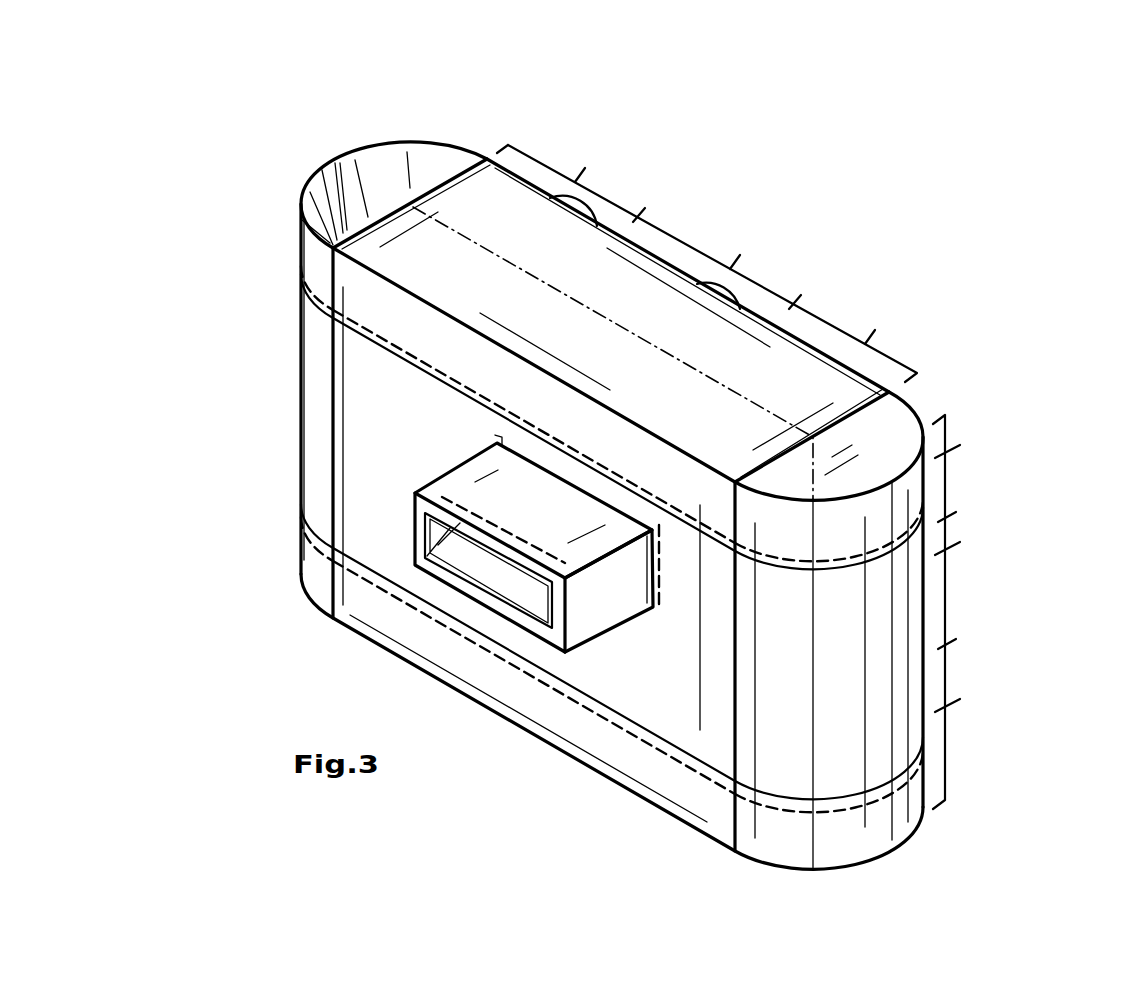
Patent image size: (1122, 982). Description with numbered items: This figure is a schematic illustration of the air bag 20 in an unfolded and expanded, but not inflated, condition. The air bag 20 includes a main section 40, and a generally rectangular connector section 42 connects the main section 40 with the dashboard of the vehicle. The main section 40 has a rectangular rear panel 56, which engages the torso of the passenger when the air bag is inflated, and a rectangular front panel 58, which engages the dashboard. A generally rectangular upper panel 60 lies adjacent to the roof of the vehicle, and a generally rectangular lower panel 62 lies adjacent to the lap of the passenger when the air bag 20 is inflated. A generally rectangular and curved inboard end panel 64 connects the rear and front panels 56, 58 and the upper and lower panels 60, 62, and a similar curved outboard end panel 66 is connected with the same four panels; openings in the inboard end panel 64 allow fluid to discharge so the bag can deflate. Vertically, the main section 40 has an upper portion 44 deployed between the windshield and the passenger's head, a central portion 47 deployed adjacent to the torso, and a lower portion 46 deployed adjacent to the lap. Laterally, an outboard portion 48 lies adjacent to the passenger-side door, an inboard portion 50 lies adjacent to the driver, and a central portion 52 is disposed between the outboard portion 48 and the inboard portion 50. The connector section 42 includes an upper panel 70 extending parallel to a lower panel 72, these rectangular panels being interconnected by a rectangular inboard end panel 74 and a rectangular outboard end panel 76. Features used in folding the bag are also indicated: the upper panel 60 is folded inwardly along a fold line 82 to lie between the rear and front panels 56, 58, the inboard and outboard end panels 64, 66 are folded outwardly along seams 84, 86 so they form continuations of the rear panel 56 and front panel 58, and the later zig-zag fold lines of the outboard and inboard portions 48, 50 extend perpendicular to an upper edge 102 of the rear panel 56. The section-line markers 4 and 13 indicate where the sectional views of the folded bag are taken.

The air bag 20 is at (815, 248).
The main section 40 is at (292, 318).
The seam 86 is at (342, 216).
The outboard end panel 66 is at (318, 408).
The upper panel 60 is at (463, 285).
The fold line 82 is at (663, 350).
The upper edge 102 is at (550, 198).
The rear panel 56 is at (698, 286).
The outboard portion 48 is at (571, 183).
The central portion 52 is at (719, 263).
The inboard portion 50 is at (858, 343).
The upper portion 44 is at (964, 468).
The central portion 47 is at (966, 583).
The lower portion 46 is at (966, 726).
The section line 4- 4 is at (397, 92).
The section line 13- 13 is at (680, 506).
The front panel 58 is at (647, 690).
The connector section 42 is at (455, 595).
The lower panel 62 is at (667, 813).
The inboard end panel 64 is at (843, 837).
The seam 84 is at (890, 683).
The upper panel 70 is at (503, 491).
The lower panel 72 is at (533, 602).
The inboard end panel 74 is at (600, 588).
The outboard end panel 76 is at (444, 533).